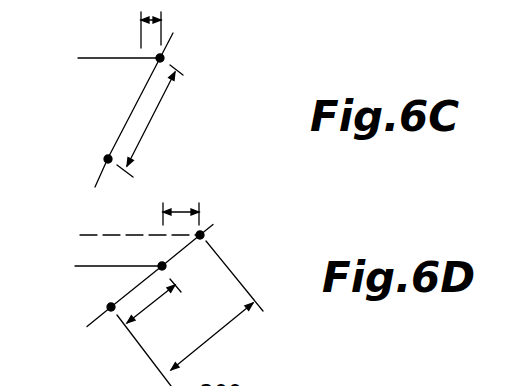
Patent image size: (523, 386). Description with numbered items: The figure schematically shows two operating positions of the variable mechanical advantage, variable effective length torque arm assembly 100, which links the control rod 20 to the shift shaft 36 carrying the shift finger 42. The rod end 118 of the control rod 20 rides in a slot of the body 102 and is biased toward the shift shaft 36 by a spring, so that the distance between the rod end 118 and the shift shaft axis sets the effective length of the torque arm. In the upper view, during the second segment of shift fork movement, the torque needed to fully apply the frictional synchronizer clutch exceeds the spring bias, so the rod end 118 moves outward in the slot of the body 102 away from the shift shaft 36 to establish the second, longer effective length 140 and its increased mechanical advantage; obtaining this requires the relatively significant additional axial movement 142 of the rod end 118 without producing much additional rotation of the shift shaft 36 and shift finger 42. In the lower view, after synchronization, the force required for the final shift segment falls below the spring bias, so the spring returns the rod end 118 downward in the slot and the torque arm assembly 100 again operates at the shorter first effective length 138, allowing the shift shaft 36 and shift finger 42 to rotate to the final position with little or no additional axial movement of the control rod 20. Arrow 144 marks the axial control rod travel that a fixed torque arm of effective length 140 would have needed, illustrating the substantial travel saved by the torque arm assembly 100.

In FIG. 6C, the control rod 20 is at (95, 59).
In FIG. 6D, the control rod 20 is at (87, 267).
In FIG. 6C, the shift shaft 36 is at (105, 158).
In FIG. 6D, the shift shaft 36 is at (107, 307).
In FIG. 6C, the shift finger 42 is at (97, 178).
In FIG. 6D, the shift finger 42 is at (95, 319).
In FIG. 6C, the torque arm assembly 100 is at (219, 88).
In FIG. 6D, the torque arm assembly 100 is at (257, 263).
In FIG. 6C, the body 102 is at (165, 50).
In FIG. 6D, the body 102 is at (182, 249).
In FIG. 6C, the rod end 118 is at (156, 62).
In FIG. 6D, the first effective length 138 is at (148, 303).
In FIG. 6C, the second effective length 140 is at (150, 120).
In FIG. 6D, the second effective length 140 is at (213, 333).
In FIG. 6C, the additional axial movement 142 is at (152, 13).
In FIG. 6D, the arrow 144 is at (178, 205).